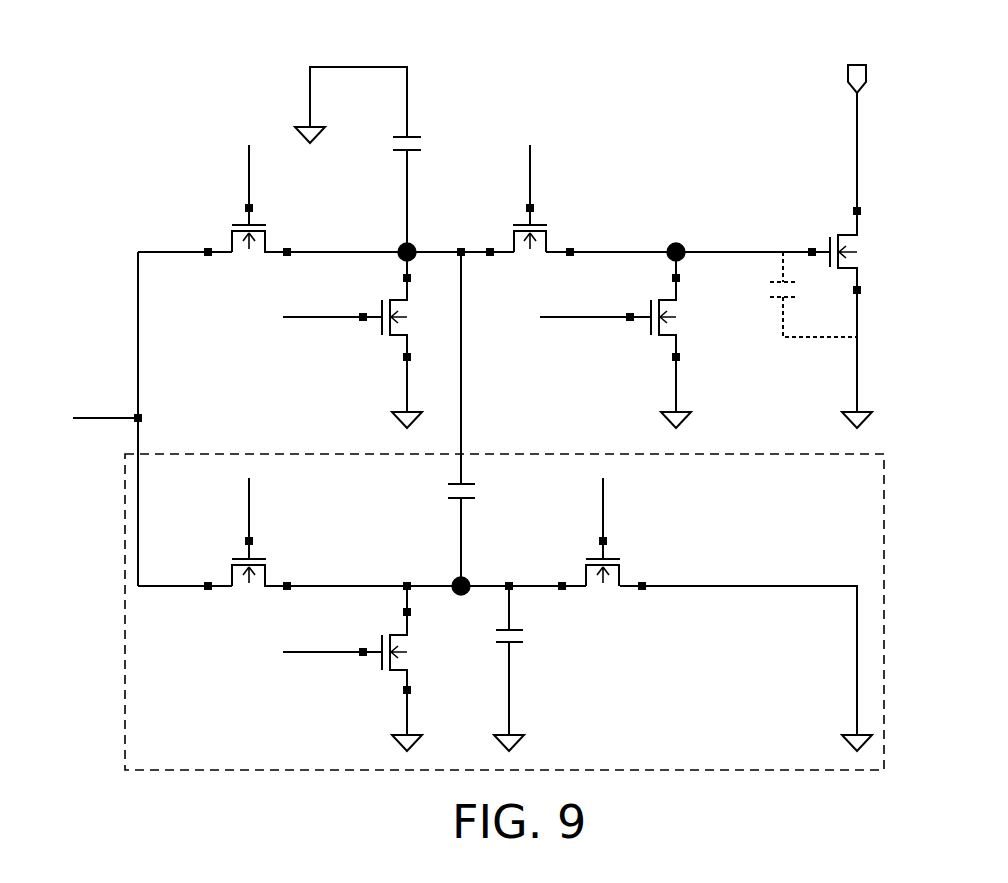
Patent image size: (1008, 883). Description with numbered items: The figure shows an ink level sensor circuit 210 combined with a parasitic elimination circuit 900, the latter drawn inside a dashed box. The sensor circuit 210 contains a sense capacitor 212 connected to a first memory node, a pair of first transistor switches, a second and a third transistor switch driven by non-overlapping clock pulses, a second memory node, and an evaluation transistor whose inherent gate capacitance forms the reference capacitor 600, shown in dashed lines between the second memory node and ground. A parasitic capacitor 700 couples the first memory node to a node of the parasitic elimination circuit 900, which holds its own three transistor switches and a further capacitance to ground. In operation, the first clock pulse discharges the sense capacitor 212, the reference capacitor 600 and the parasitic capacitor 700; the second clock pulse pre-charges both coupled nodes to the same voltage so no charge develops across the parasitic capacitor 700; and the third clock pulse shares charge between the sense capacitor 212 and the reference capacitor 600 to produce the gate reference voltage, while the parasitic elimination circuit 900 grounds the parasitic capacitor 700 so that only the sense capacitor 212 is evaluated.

The ink level sensor circuit 210 is at (197, 70).
The sense capacitor 212 is at (444, 109).
The reference capacitor 600 is at (772, 323).
The parasitic capacitor 700 is at (428, 494).
The parasitic elimination circuit 900 is at (124, 640).